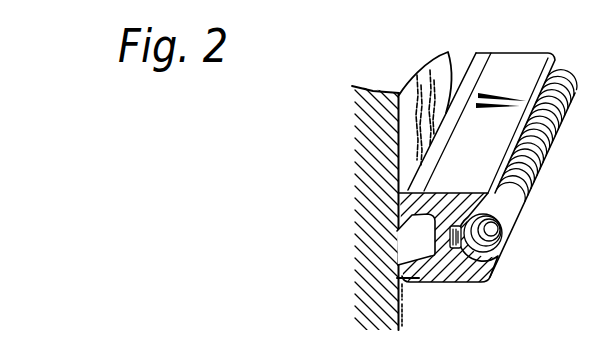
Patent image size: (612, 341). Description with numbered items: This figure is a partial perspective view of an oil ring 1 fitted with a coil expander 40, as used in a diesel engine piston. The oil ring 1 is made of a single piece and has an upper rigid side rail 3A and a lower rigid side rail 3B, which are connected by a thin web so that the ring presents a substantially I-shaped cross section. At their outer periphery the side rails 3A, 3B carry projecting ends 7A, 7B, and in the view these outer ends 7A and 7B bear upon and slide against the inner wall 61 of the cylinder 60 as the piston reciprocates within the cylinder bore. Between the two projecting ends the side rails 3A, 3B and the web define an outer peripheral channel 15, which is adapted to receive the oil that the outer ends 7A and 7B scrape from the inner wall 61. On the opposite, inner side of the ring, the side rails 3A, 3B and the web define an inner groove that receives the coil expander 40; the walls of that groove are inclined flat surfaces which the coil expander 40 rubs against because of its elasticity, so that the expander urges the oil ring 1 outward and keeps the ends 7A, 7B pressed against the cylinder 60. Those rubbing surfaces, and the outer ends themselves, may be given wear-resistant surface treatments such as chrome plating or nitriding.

The oil ring 1 is at (529, 55).
The upper rigid side rail 3A is at (510, 220).
The lower rigid side rail 3B is at (458, 281).
The peripheral outer projecting end 7A is at (455, 68).
The peripheral outer projecting end 7B is at (397, 277).
The outer peripheral channel 15 is at (397, 232).
The coil expander 40 is at (545, 140).
The cylinder 60 is at (378, 185).
The inner wall 61 is at (403, 122).